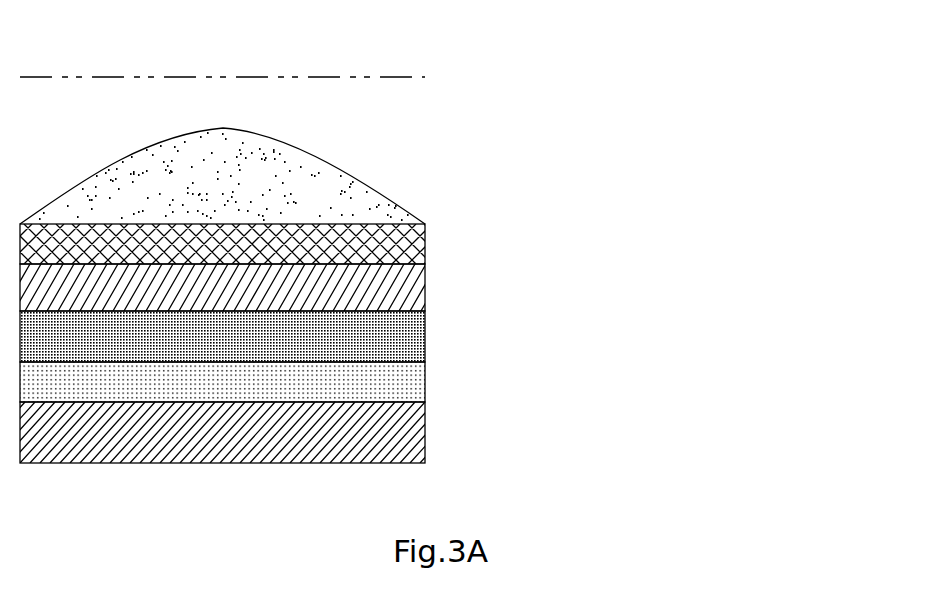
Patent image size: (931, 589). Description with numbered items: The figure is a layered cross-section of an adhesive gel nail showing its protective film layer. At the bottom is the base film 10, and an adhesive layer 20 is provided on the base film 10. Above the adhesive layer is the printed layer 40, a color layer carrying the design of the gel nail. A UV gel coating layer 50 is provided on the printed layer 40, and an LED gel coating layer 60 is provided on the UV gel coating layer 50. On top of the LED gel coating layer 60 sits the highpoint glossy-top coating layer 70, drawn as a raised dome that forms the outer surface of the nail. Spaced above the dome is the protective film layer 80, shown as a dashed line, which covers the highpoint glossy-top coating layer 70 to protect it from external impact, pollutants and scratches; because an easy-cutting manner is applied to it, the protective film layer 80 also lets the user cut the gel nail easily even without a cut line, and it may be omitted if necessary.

The base film 10 is at (418, 433).
The adhesive layer 20 is at (418, 383).
The printed layer 40 is at (418, 336).
The UV gel coating layer 50 is at (418, 291).
The LED gel coating layer 60 is at (427, 243).
The highpoint glossy-top coating layer 70 is at (365, 198).
The protective film layer 80 is at (222, 77).